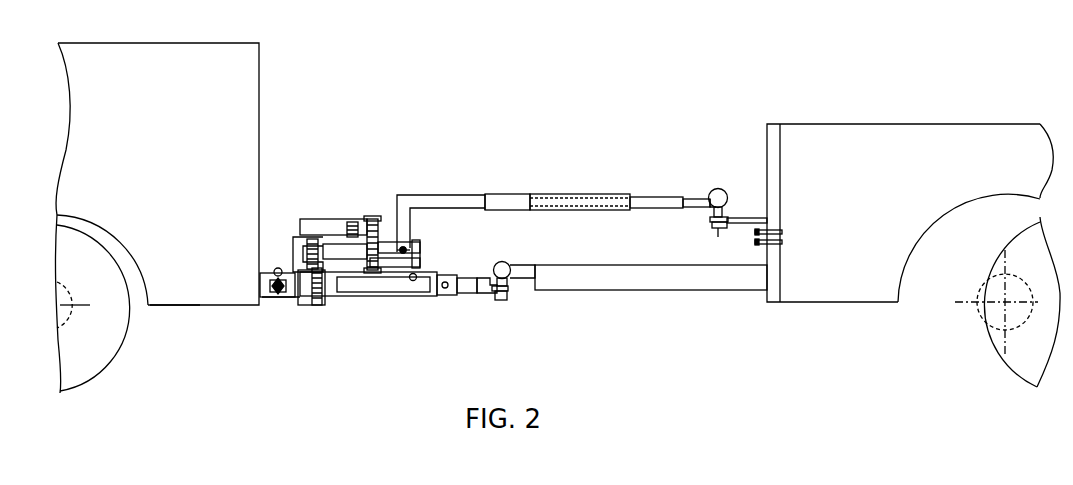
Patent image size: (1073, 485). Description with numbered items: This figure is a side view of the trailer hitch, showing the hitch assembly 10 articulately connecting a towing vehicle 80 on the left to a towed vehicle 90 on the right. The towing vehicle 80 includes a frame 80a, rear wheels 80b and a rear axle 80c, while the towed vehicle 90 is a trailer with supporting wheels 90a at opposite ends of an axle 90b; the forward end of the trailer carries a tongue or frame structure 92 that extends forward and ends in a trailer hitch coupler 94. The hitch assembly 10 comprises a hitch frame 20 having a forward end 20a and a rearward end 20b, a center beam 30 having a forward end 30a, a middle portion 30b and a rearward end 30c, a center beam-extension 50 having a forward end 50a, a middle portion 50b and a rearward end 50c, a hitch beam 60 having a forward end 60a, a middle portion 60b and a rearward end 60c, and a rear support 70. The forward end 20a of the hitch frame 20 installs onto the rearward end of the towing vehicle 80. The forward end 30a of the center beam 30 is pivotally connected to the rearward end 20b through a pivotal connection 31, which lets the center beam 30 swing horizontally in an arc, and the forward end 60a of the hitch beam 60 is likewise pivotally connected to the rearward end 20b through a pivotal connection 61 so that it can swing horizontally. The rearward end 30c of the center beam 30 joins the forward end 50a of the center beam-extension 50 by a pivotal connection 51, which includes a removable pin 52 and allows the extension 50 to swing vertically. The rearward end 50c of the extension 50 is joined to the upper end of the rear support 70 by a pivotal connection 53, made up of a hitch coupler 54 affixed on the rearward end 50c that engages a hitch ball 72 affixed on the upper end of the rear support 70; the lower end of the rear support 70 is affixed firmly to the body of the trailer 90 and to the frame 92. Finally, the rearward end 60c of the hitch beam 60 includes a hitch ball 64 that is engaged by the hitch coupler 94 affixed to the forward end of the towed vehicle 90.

The hitch assembly 10 is at (431, 163).
The hitch frame 20 is at (295, 303).
The forward end of hitch frame 20a is at (270, 297).
The rearward end of hitch frame 20b is at (300, 308).
The center beam 30 is at (376, 244).
The forward end of center beam 30a is at (294, 242).
The middle portion of center beam 30b is at (372, 244).
The rearward end of center beam 30c is at (413, 260).
The pivotal connection 31 is at (302, 240).
The center beam-extension 50 is at (463, 193).
The forward end of center beam-extension 50a is at (410, 237).
The middle portion of center beam-extension 50b is at (530, 193).
The rearward end of center beam-extension 50c is at (678, 197).
The pivotal connection 51 is at (408, 250).
The removable pin 52 is at (403, 250).
The pivotal connection 53 is at (720, 189).
The hitch coupler 54 is at (709, 194).
The hitch beam 60 is at (390, 297).
The forward end of hitch beam 60a is at (305, 305).
The middle portion of hitch beam 60b is at (408, 297).
The rearward end of hitch beam 60c is at (445, 297).
The pivotal connection 61 is at (320, 305).
The hitch ball 64 is at (492, 292).
The rear support 70 is at (727, 218).
The hitch ball 72 is at (728, 193).
The towing vehicle 80 is at (181, 210).
The frame 80a is at (172, 305).
The rear wheels 80b is at (112, 363).
The rear axle 80c is at (72, 325).
The towed vehicle 90 is at (795, 272).
The supporting wheels 90a is at (933, 357).
The axle 90b is at (985, 320).
The tongue or frame structure 92 is at (742, 290).
The trailer hitch coupler 94 is at (517, 278).